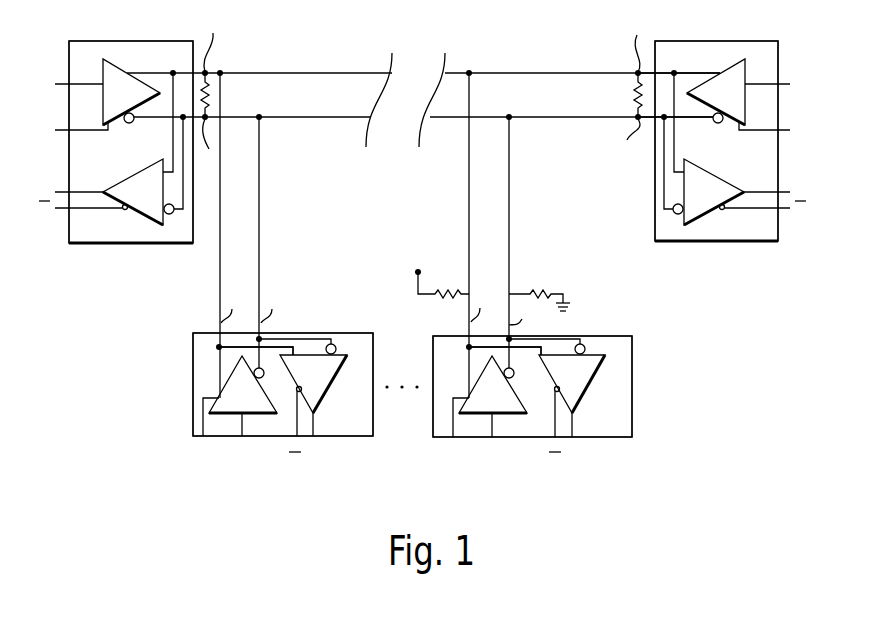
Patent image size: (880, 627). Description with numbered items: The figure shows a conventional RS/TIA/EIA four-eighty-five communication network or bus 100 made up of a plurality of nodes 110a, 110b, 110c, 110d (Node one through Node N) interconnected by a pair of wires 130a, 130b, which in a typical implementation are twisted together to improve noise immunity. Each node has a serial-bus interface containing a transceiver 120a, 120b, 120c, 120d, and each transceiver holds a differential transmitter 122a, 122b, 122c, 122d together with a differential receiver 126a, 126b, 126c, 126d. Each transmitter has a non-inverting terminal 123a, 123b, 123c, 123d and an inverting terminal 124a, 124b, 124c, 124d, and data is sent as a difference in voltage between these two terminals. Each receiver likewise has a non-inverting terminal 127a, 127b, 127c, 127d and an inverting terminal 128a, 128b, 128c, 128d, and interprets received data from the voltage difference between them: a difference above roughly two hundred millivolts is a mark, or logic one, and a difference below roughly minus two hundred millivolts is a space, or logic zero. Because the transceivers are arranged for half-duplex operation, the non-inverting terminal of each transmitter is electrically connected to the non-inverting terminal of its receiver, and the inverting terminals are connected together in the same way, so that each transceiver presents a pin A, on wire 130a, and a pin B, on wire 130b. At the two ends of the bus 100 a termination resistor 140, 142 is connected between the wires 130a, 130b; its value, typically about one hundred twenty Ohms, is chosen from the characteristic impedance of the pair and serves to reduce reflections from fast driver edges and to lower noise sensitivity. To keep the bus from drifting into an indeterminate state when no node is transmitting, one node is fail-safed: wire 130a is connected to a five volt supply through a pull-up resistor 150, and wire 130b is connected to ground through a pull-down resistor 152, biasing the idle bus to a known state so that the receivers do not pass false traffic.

The communication network or bus 100 is at (683, 302).
The node 110a is at (131, 171).
The node 110b is at (239, 384).
The node 110c is at (579, 389).
The node 110d is at (716, 171).
The RS/TIA/EIA-485 transceiver 120a is at (80, 41).
The RS/TIA/EIA-485 transceiver 120b is at (353, 437).
The RS/TIA/EIA-485 transceiver 120c is at (615, 438).
The RS/TIA/EIA-485 transceiver 120d is at (778, 241).
The differential transmitter 122a is at (117, 67).
The differential transmitter 122b is at (223, 417).
The differential transmitter 122c is at (524, 417).
The differential transmitter 122d is at (734, 64).
The non-inverting terminal 123a is at (143, 73).
The non-inverting terminal 123b is at (217, 365).
The non-inverting terminal 123c is at (467, 370).
The non-inverting terminal 123d is at (703, 72).
The inverting terminal 124a is at (128, 123).
The inverting terminal 124b is at (263, 378).
The inverting terminal 124c is at (512, 378).
The inverting terminal 124d is at (717, 123).
The differential receiver 126a is at (135, 172).
The differential receiver 126b is at (337, 377).
The differential receiver 126c is at (597, 377).
The differential receiver 126d is at (717, 170).
The non-inverting terminal 127a is at (170, 178).
The non-inverting terminal 127b is at (290, 346).
The non-inverting terminal 127c is at (541, 339).
The non-inverting terminal 127d is at (674, 177).
The inverting terminal 128a is at (171, 214).
The inverting terminal 128b is at (333, 344).
The inverting terminal 128c is at (580, 344).
The inverting terminal 128d is at (677, 214).
The wire 130a is at (470, 71).
The wire 130b is at (510, 113).
The termination resistor 140 is at (210, 70).
The termination resistor 142 is at (636, 70).
The pull-up resistor 150 is at (447, 296).
The pull-down resistor 152 is at (541, 292).